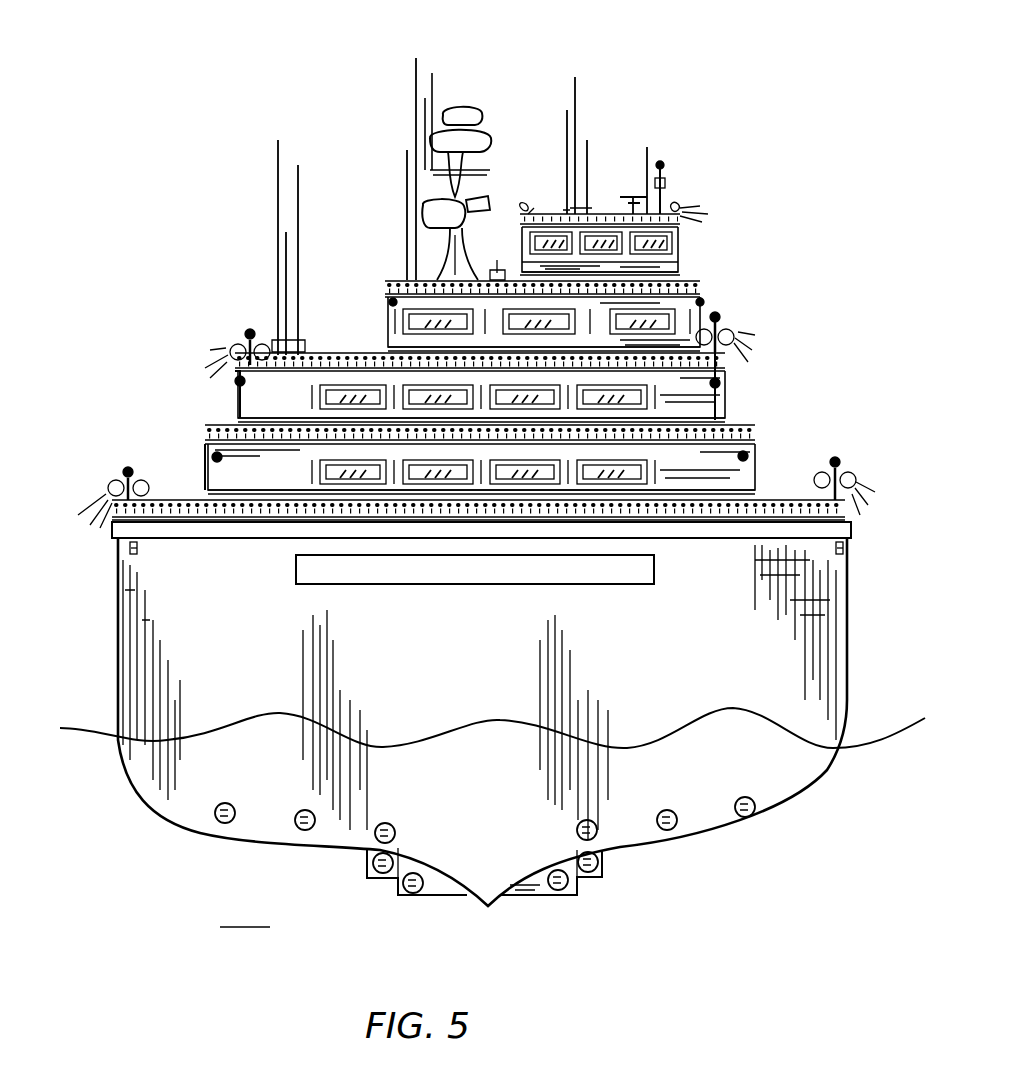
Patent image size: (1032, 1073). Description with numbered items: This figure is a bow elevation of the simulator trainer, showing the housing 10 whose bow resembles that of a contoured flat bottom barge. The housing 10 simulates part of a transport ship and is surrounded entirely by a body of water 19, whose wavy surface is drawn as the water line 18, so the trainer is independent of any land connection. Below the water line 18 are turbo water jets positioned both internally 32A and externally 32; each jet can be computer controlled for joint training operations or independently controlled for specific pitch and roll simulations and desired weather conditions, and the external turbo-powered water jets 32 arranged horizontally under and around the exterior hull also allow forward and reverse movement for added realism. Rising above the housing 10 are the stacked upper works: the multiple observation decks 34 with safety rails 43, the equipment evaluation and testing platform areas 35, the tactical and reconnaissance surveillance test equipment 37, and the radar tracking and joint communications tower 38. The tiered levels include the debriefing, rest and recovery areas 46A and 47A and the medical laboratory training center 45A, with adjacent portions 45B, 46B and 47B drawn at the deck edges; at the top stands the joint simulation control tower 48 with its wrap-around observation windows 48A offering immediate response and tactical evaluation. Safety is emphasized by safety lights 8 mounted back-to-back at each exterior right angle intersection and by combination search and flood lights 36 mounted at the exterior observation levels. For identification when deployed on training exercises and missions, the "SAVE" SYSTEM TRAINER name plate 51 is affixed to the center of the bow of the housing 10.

The safety lights 8 is at (240, 381).
The housing 10 is at (798, 806).
The water line 18 is at (895, 745).
The body of water 19 is at (245, 913).
The external turbo water jets 32 is at (603, 865).
The internal turbo water jets 32A is at (303, 810).
The multiple observation decks 34 is at (393, 282).
The equipment evaluation and testing platform areas 35 is at (497, 273).
The combination search/flood lights 36 is at (233, 345).
The tactical and reconnaissance surveillance test equipment 37 is at (278, 192).
The radar tracking and joint communications tower 38 is at (477, 107).
The safety rails 43 is at (233, 367).
The medical laboratory training center 45A is at (840, 460).
The first deck fitting 45B is at (748, 462).
The debriefing/rest and recovery area 46A is at (733, 405).
The second deck fitting 46B is at (705, 393).
The debriefing/rest and recovery area 47A is at (725, 322).
The third deck fitting 47B is at (705, 308).
The joint simulation control tower 48 is at (677, 273).
The wrap-around observation windows 48A is at (597, 213).
The sign 51 is at (660, 570).